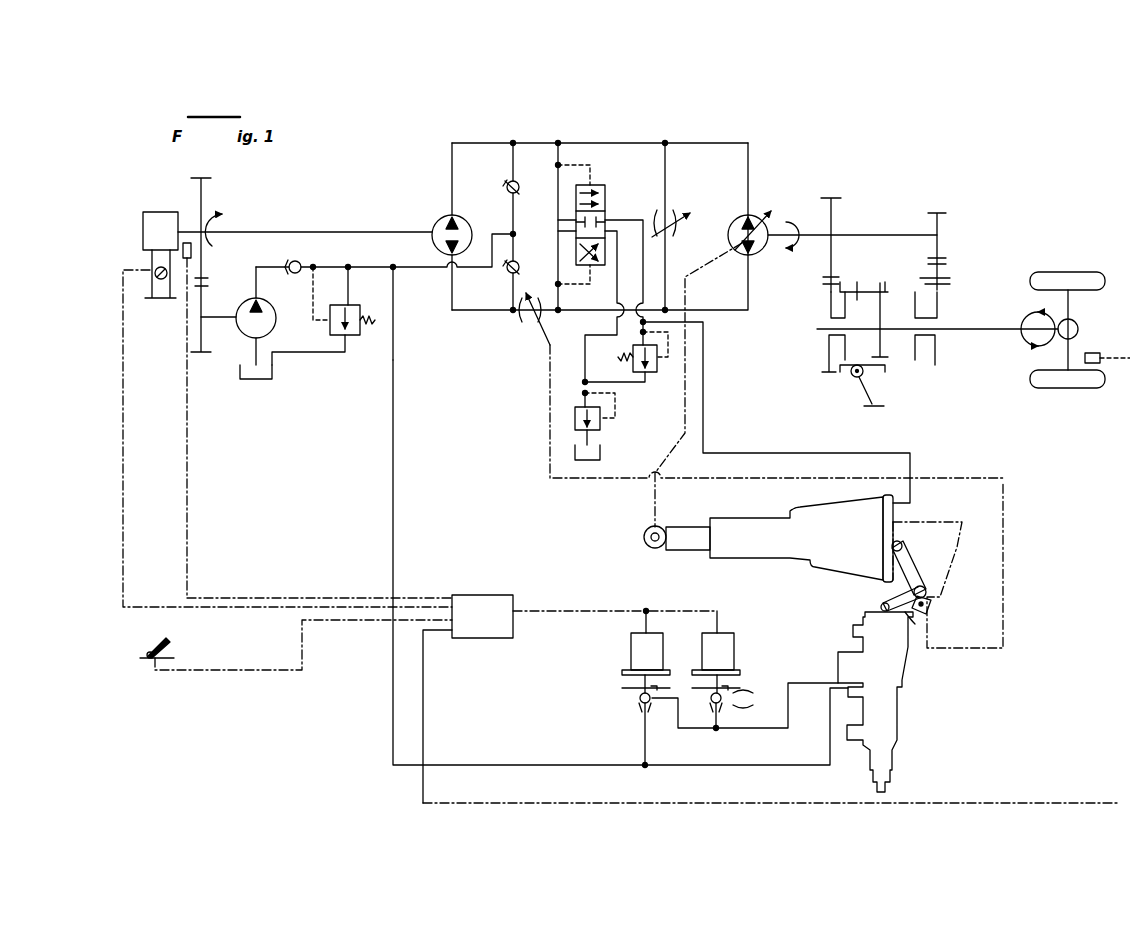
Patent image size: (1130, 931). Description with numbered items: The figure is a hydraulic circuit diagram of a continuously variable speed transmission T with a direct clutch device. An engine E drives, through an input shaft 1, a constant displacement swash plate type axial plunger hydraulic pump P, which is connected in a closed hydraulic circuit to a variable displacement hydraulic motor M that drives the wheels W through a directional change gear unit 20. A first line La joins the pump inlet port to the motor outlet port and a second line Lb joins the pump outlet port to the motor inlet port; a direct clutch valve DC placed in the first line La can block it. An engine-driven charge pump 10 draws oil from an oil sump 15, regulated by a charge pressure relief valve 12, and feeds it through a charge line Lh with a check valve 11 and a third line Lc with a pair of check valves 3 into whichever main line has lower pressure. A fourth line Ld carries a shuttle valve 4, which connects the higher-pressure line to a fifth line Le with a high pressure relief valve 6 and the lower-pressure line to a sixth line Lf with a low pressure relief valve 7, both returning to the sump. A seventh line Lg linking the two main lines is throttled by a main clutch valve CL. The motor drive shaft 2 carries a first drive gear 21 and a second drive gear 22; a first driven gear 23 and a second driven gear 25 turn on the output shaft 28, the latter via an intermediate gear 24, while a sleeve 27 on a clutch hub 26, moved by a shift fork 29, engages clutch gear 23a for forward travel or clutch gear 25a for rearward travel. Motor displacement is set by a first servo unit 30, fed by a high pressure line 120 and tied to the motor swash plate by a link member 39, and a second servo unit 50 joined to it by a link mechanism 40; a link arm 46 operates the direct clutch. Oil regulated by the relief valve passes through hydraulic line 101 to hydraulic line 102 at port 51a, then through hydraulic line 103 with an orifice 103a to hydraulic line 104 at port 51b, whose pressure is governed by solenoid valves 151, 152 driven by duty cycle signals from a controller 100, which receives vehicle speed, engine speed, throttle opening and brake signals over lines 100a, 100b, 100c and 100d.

The engine E is at (143, 238).
The input shaft 1 is at (362, 232).
The hydraulic pump P is at (434, 224).
The hydraulic motor M is at (762, 205).
The continuously variable speed transmission T is at (733, 142).
The drive shaft 2 is at (805, 235).
The check valves 3 is at (508, 182).
The shuttle valve 4 is at (605, 190).
The high pressure relief valve 6 is at (657, 370).
The low pressure relief valve 7 is at (603, 428).
The charge pump 10 is at (276, 330).
The check valve 11 is at (290, 275).
The charge pressure relief valve 12 is at (348, 306).
The oil sump 15 is at (280, 373).
The directional change gear unit 20 is at (889, 204).
The first drive gear 21 is at (834, 223).
The second drive gear 22 is at (942, 225).
The first driven gear 23 is at (823, 291).
The clutch gear 23a is at (856, 282).
The intermediate gear 24 is at (945, 271).
The second driven gear 25 is at (940, 349).
The clutch gear 25a is at (950, 288).
The clutch hub 26 is at (885, 284).
The sleeve 27 is at (885, 369).
The output shaft 28 is at (990, 328).
The shift fork 29 is at (877, 398).
The wheels W is at (1074, 271).
The second line Lb is at (494, 143).
The first line La is at (488, 309).
The third line Lc is at (512, 214).
The fourth line Ld is at (560, 152).
The fifth line Le is at (624, 220).
The sixth line Lf is at (587, 347).
The seventh line Lg is at (667, 176).
The charge line Lh is at (418, 288).
The main clutch valve CL is at (678, 226).
The direct clutch valve DC is at (524, 323).
The first servo unit 30 is at (775, 570).
The link member 39 is at (688, 377).
The link mechanism 40 is at (926, 568).
The link arm 46 is at (1004, 528).
The second servo unit 50 is at (856, 626).
The port 51a is at (838, 657).
The port 51b is at (852, 691).
The controller 100 is at (495, 595).
The line 100a is at (527, 803).
The line 100b is at (188, 532).
The line 100c is at (125, 532).
The line 100d is at (212, 663).
The hydraulic line 101 is at (394, 368).
The hydraulic line 102 is at (770, 765).
The hydraulic line 103 is at (633, 728).
The orifice 103a is at (652, 738).
The hydraulic line 104 is at (760, 728).
The high pressure line 120 is at (704, 412).
The solenoid valve 151 is at (666, 652).
The solenoid valve 152 is at (738, 652).